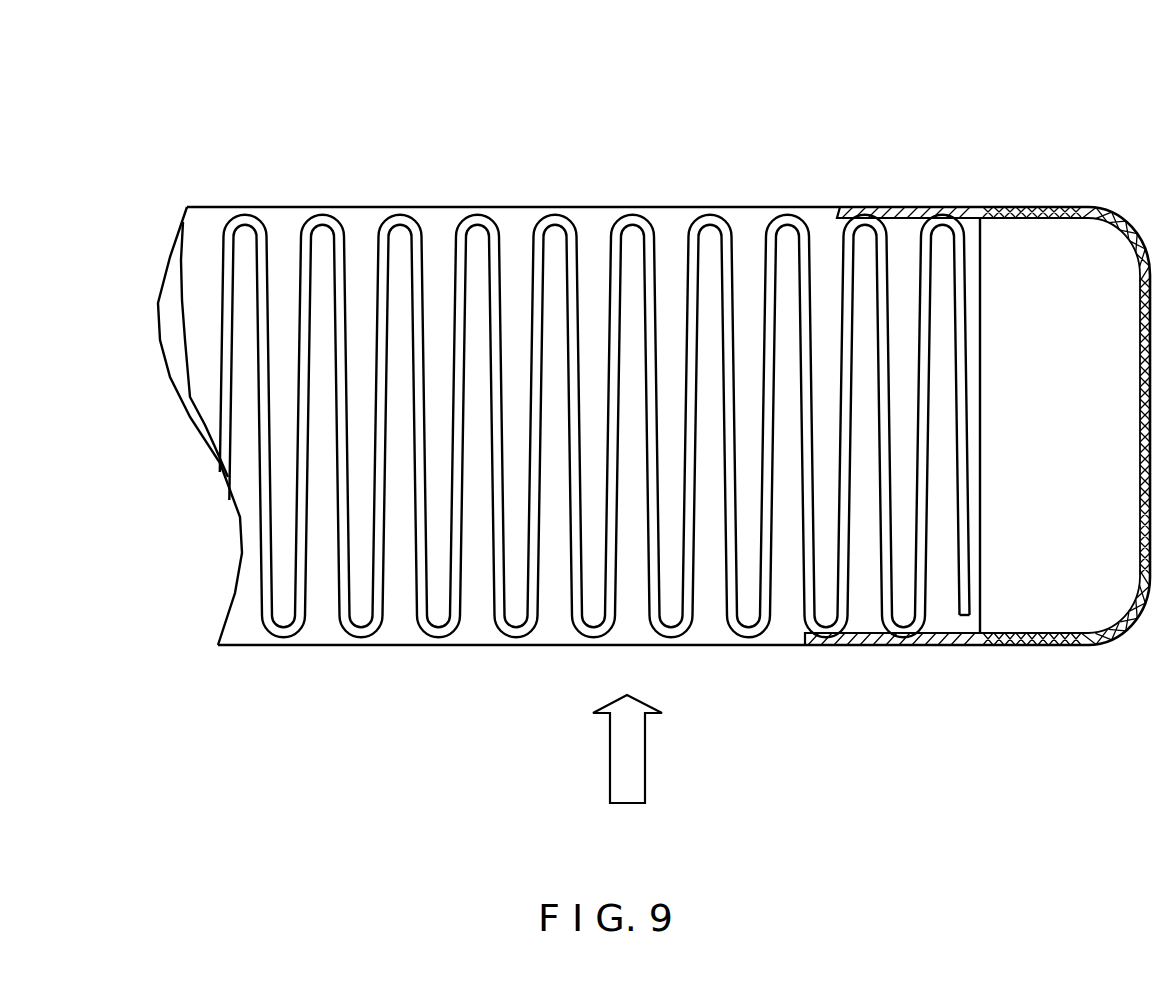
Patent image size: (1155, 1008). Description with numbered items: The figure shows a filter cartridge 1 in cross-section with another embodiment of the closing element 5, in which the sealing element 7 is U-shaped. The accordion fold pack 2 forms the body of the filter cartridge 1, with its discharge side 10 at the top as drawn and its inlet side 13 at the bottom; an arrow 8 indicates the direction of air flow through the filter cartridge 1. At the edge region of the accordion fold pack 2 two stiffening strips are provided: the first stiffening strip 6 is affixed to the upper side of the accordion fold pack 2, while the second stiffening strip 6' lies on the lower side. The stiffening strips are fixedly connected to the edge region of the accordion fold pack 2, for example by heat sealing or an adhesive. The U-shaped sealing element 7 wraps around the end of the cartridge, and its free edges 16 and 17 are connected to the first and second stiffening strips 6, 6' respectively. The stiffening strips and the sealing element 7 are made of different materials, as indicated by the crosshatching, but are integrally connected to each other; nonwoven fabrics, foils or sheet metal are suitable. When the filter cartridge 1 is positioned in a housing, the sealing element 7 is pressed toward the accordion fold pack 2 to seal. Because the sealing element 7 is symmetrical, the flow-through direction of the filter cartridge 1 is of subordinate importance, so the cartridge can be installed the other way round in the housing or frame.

The filter cartridge 1 is at (395, 188).
The accordion fold pack 2 is at (500, 612).
The closing element 5 is at (913, 660).
The first stiffening strip 6 is at (908, 139).
The second stiffening strip 6' is at (892, 710).
The sealing element 7 is at (1045, 207).
The arrow 8 is at (625, 787).
The discharge side 10 is at (557, 207).
The inlet side 13 is at (543, 645).
The free edge 16 is at (988, 221).
The free edge 17 is at (988, 632).